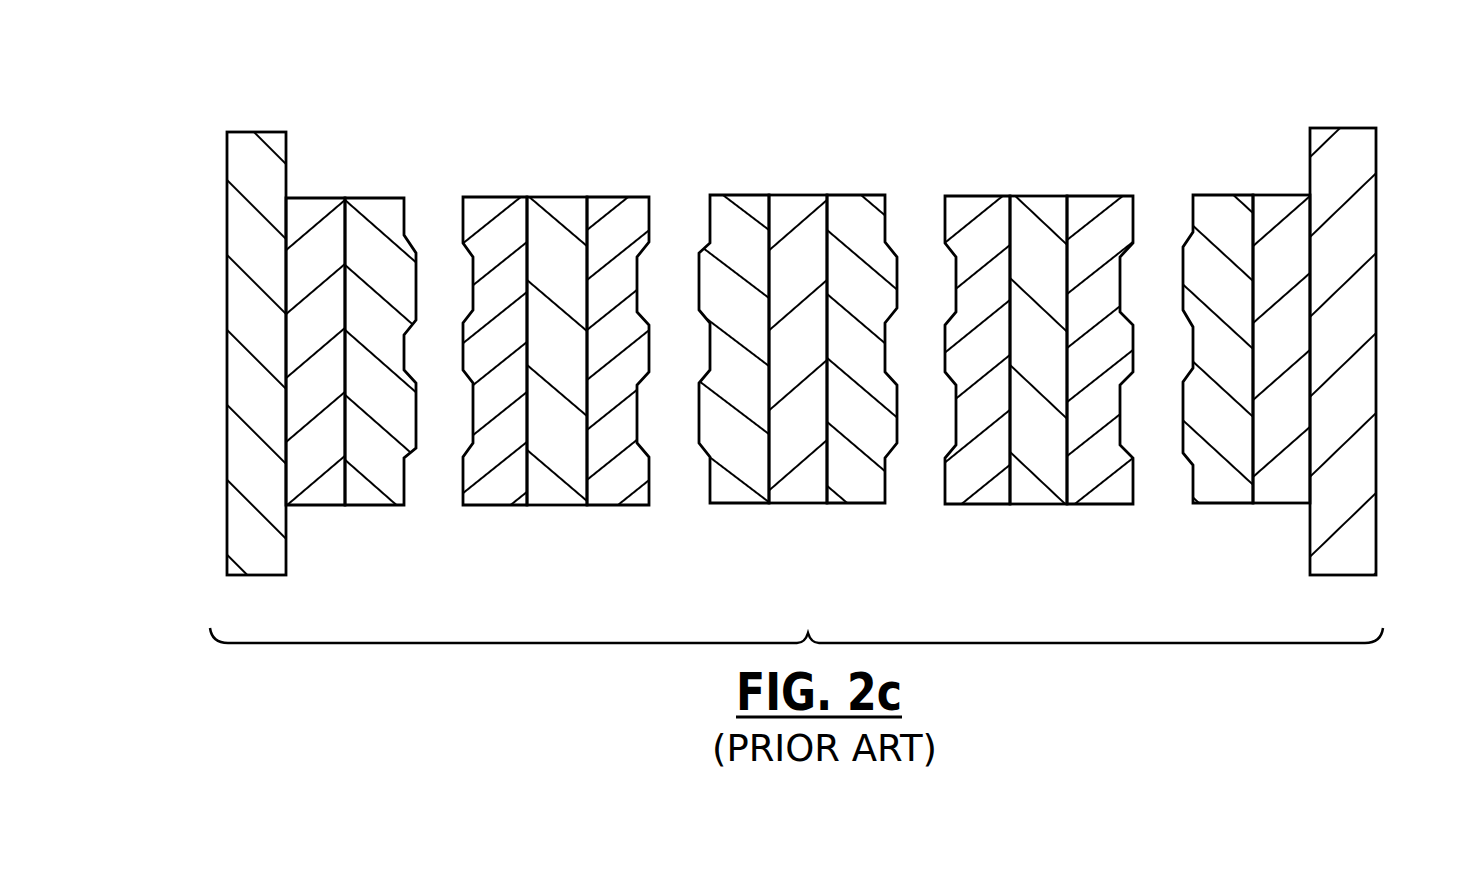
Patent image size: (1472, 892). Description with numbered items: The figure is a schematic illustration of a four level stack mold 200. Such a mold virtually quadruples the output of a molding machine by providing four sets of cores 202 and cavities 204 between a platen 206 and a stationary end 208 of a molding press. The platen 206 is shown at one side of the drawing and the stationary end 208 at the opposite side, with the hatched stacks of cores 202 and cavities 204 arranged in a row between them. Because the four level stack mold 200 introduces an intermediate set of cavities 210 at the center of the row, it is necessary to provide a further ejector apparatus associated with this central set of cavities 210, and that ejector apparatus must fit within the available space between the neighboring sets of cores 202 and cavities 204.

The four level stack mold 200 is at (1032, 80).
The cores 202 is at (368, 490).
The cavities 204 is at (495, 207).
The platen 206 is at (248, 257).
The stationary end 208 is at (1353, 253).
The intermediate set of cavities 210 is at (800, 170).